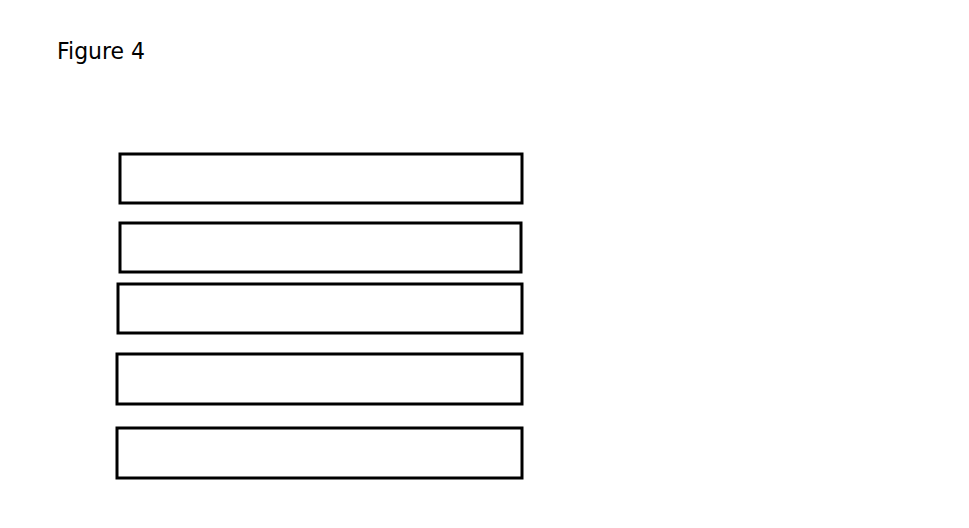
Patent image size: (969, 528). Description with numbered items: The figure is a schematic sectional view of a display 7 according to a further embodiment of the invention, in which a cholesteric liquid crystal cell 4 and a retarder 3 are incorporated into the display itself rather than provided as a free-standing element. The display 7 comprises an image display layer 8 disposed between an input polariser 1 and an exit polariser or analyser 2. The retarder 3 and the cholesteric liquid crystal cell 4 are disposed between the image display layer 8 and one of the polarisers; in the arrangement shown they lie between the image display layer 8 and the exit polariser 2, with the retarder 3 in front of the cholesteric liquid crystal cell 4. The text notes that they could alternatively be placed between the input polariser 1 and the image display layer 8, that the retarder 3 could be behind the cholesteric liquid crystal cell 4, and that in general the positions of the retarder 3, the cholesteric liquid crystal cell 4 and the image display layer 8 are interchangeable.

The input polariser 1 is at (523, 455).
The exit polariser 2 is at (523, 183).
The retarder 3 is at (522, 247).
The cholesteric liquid crystal cell 4 is at (523, 309).
The display 7 is at (66, 158).
The image display layer 8 is at (523, 380).